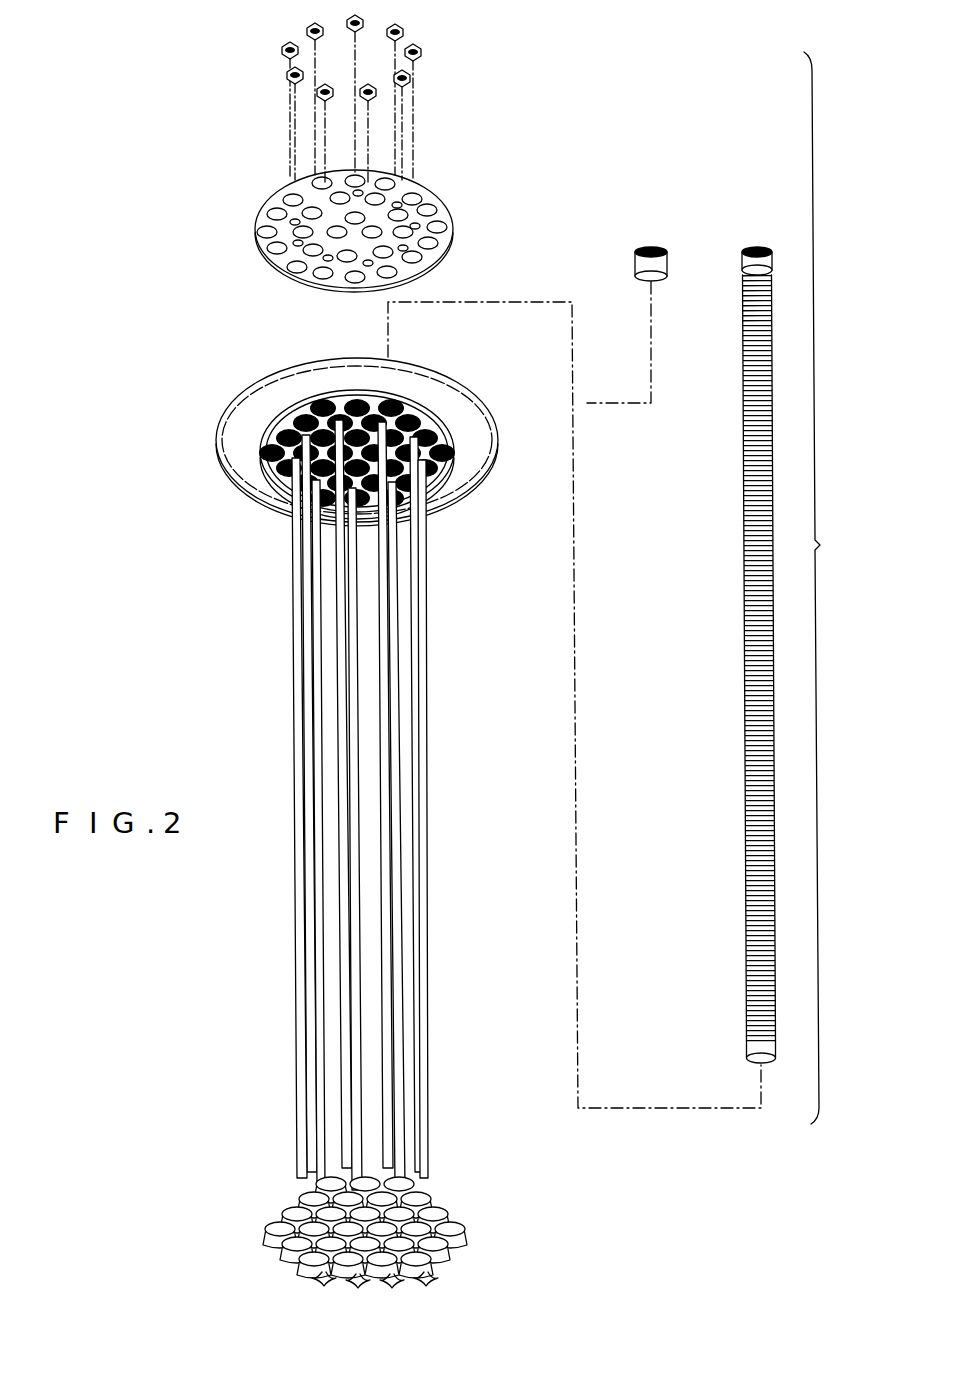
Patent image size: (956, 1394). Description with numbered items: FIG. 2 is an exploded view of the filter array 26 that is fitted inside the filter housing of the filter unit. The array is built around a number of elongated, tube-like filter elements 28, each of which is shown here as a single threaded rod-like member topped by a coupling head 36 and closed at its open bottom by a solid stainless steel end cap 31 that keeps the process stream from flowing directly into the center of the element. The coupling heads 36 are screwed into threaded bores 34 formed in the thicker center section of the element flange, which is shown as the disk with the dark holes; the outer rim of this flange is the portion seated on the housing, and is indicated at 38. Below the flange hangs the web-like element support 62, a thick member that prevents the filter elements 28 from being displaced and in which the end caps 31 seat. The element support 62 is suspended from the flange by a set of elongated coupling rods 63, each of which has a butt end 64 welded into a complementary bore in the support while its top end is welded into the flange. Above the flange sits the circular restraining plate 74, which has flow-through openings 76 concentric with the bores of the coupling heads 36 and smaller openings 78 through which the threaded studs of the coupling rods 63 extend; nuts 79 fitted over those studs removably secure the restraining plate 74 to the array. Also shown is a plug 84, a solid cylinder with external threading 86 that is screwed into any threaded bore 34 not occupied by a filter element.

The filter array 26 is at (839, 588).
The filter element 28 is at (742, 621).
The end cap 31 is at (752, 1052).
The threaded bore 34 is at (285, 416).
The coupling head 36 is at (745, 268).
The upper support plate 38 is at (465, 482).
The element support 62 is at (460, 1210).
The coupling rod 63 is at (295, 648).
The butt end 64 is at (455, 1248).
The restraining plate 74 is at (447, 222).
The flow-through opening 76 is at (297, 228).
The opening 78 is at (316, 203).
The nut 79 is at (290, 72).
The plug 84 is at (635, 262).
The external threading 86 is at (667, 268).